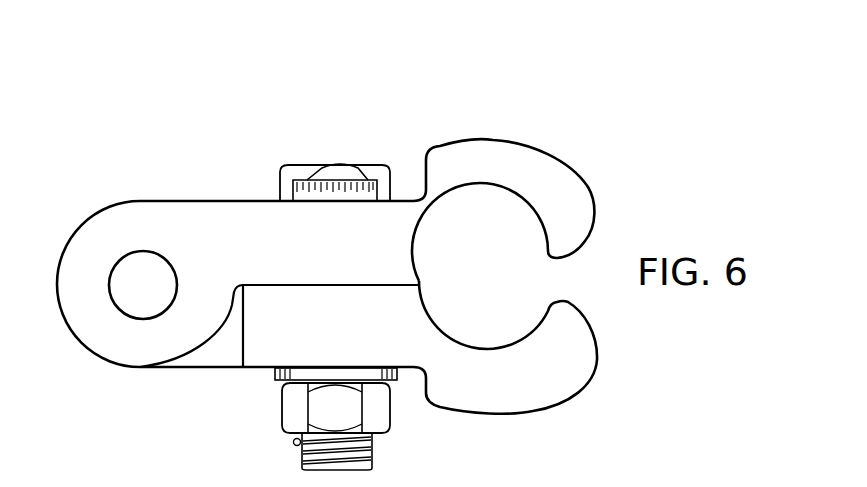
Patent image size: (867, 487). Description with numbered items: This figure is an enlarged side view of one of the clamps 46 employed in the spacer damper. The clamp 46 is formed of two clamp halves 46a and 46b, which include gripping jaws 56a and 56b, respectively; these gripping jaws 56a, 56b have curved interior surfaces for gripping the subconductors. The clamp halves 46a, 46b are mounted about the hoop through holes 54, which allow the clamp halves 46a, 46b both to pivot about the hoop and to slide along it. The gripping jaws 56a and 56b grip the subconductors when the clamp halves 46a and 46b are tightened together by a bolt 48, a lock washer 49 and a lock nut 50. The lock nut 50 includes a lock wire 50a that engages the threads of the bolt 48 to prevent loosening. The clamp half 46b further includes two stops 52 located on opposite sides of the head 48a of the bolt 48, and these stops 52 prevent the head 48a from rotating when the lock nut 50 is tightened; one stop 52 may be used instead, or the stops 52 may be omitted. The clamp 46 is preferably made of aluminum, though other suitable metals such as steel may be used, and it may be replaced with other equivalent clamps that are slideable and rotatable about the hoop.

The clamp 46 is at (477, 101).
The clamp half 46a is at (480, 398).
The clamp half 46b is at (240, 220).
The bolt 48 is at (372, 457).
The head of bolt 48a is at (330, 163).
The lock washer 49 is at (275, 372).
The lock nut 50 is at (280, 415).
The lock wire 50a is at (293, 446).
The stop 52 is at (367, 190).
The hole 54 is at (126, 308).
The gripping jaw 56a is at (555, 383).
The gripping jaw 56b is at (555, 173).